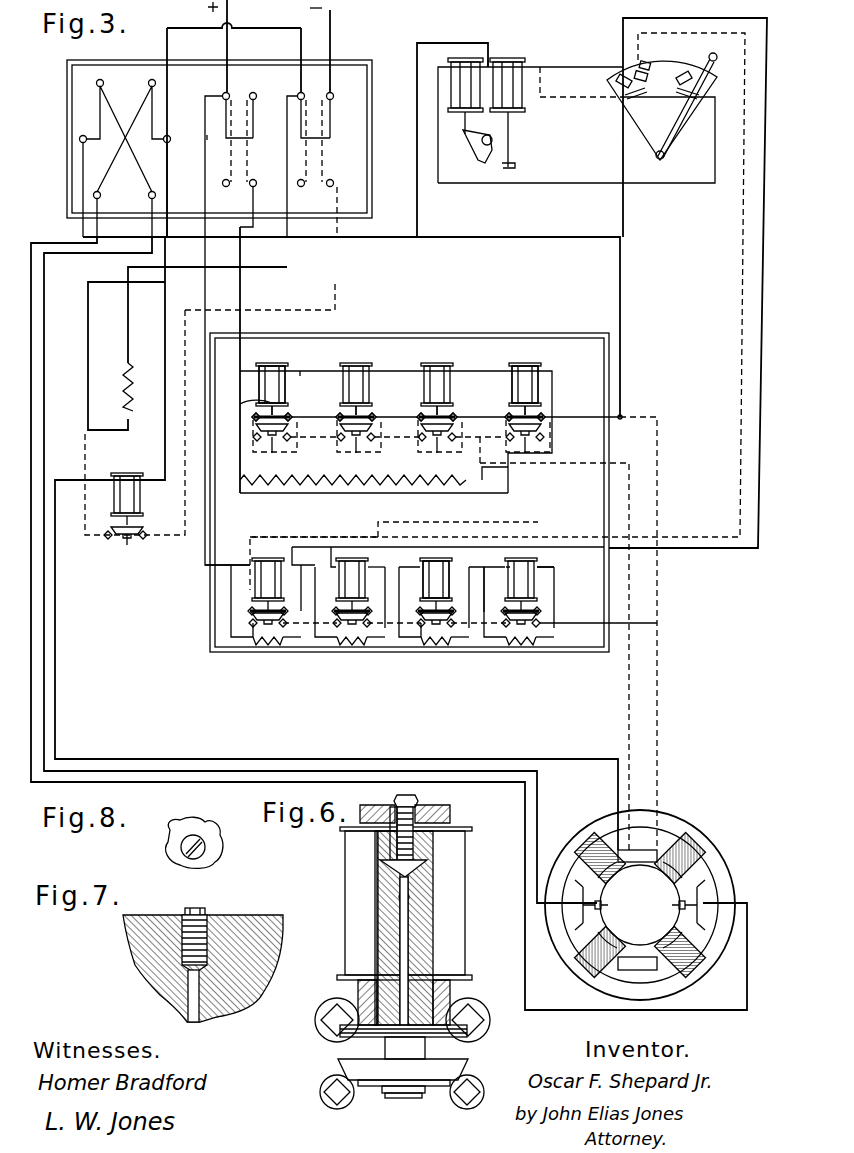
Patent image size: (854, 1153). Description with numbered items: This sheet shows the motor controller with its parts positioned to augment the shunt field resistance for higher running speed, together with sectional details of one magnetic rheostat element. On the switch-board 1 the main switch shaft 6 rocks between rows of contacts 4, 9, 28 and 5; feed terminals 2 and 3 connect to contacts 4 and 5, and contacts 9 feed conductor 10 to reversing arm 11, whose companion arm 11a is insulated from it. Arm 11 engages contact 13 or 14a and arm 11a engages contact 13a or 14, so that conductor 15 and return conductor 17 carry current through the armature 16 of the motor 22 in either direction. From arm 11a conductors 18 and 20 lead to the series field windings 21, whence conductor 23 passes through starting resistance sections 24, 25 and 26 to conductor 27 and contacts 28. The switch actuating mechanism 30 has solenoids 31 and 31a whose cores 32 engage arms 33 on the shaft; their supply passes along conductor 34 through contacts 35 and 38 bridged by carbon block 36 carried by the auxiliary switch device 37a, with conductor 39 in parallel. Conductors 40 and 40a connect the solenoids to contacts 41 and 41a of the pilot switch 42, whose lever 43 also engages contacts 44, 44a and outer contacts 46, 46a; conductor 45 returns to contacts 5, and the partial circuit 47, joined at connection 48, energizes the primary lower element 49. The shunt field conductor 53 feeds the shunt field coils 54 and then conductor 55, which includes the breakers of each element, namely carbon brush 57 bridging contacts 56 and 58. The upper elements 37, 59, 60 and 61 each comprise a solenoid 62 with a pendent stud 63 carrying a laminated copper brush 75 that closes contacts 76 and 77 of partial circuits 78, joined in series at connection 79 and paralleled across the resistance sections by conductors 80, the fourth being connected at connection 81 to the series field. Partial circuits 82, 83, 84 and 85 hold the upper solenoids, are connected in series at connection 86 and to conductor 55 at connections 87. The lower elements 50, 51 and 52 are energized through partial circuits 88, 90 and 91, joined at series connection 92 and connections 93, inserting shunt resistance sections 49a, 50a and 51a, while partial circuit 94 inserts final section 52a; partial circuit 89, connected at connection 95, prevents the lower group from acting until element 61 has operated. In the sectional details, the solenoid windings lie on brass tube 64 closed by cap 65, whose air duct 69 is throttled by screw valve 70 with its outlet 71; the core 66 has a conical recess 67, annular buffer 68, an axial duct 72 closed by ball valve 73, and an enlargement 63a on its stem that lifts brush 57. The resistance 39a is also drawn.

In FIG. 3, the switch-board 1 is at (67, 101).
In FIG. 3, the feed terminal 2 is at (331, 38).
In FIG. 3, the feed terminal 3 is at (228, 12).
In FIG. 3, the main switch contacts 4 is at (333, 94).
In FIG. 3, the main switch contacts 5 is at (223, 93).
In FIG. 3, the main switch shaft 6 is at (493, 140).
In FIG. 3, the contacts 9 is at (298, 94).
In FIG. 3, the conductor 10 is at (266, 32).
In FIG. 3, the reversing switch arm 11 is at (159, 124).
In FIG. 3, the reversing switch arm 11a is at (99, 118).
In FIG. 3, the reversing contact 13 is at (148, 83).
In FIG. 3, the reversing contact 13a is at (101, 79).
In FIG. 3, the reversing contact 14 is at (101, 195).
In FIG. 3, the reversing contact 14a is at (149, 197).
In FIG. 3, the conductor 15 is at (146, 107).
In FIG. 3, the armature 16 is at (640, 905).
In FIG. 3, the return conductor 17 is at (150, 160).
In FIG. 3, the conductor 18 is at (83, 178).
In FIG. 3, the conductor 20 is at (658, 703).
In FIG. 3, the series field windings 21 is at (640, 915).
In FIG. 3, the motor 22 is at (705, 845).
In FIG. 3, the conductor 23 is at (580, 463).
In FIG. 3, the starting resistance section 24 is at (460, 494).
In FIG. 3, the starting resistance section 25 is at (360, 495).
In FIG. 3, the starting resistance section 26 is at (240, 486).
In FIG. 3, the conductor 27 is at (241, 302).
In FIG. 3, the main switch contacts 28 is at (254, 92).
In FIG. 3, the switch actuating mechanism 30 is at (505, 62).
In FIG. 3, the solenoid 31 is at (465, 85).
In FIG. 3, the solenoid 31a is at (516, 80).
In FIG. 3, the solenoid core 32 is at (506, 119).
In FIG. 3, the arms 33 is at (476, 145).
In FIG. 3, the conductor 34 is at (477, 39).
In FIG. 3, the contact 35 is at (106, 538).
In FIG. 3, the carbon block 36 is at (127, 540).
In FIG. 3, the magnetic rheostat element 37 is at (272, 353).
In FIG. 3, the auxiliary switch device 37a is at (125, 472).
In FIG. 3, the contact 38 is at (144, 539).
In FIG. 3, the conductor 39 is at (288, 263).
In FIG. 3, the resistance 39a is at (126, 380).
In FIG. 3, the conductor 40 is at (617, 184).
In FIG. 3, the conductor 40a is at (562, 97).
In FIG. 3, the pilot switch contact 41 is at (712, 110).
In FIG. 3, the pilot switch contact 41a is at (628, 95).
In FIG. 3, the pilot switch 42 is at (662, 110).
In FIG. 3, the switch lever 43 is at (679, 150).
In FIG. 3, the contact 44 is at (654, 75).
In FIG. 3, the contact 44a is at (648, 68).
In FIG. 3, the conductor 45 is at (207, 136).
In FIG. 3, the contact 46 is at (717, 59).
In FIG. 3, the contact 46a is at (616, 80).
In FIG. 3, the partial circuit 47 is at (310, 547).
In FIG. 3, the connection 48 is at (245, 568).
In FIG. 3, the magnetic rheostat element 49 is at (272, 554).
In FIG. 3, the shunt field resistance section 49a is at (272, 646).
In FIG. 3, the magnetic rheostat element 50 is at (351, 557).
In FIG. 3, the shunt field resistance section 50a is at (355, 646).
In FIG. 3, the magnetic rheostat element 51 is at (436, 557).
In FIG. 3, the shunt field resistance section 51a is at (438, 646).
In FIG. 3, the magnetic rheostat element 52 is at (537, 570).
In FIG. 3, the shunt field resistance section 52a is at (538, 646).
In FIG. 3, the shunt field conductor 53 is at (163, 308).
In FIG. 3, the shunt field coils 54 is at (660, 872).
In FIG. 3, the conductor 55 is at (240, 545).
In FIG. 3, the contact point 56 is at (544, 437).
In FIG. 6, the contact point 56 is at (464, 1103).
In FIG. 3, the carbon contact brush 57 is at (256, 428).
In FIG. 6, the carbon contact brush 57 is at (403, 1072).
In FIG. 3, the contact point 58 is at (254, 438).
In FIG. 6, the contact point 58 is at (342, 1100).
In FIG. 3, the magnetic rheostat element 59 is at (356, 376).
In FIG. 3, the magnetic rheostat element 60 is at (437, 376).
In FIG. 3, the magnetic rheostat element 61 is at (526, 376).
In FIG. 3, the solenoid 62 is at (259, 385).
In FIG. 6, the solenoid 62 is at (345, 891).
In FIG. 3, the pendent stud 63 is at (274, 410).
In FIG. 6, the pendent stud 63 is at (425, 1050).
In FIG. 6, the enlargement 63a is at (408, 1099).
In FIG. 6, the brass tube 64 is at (377, 945).
In FIG. 8, the cap 65 is at (212, 828).
In FIG. 7, the cap 65 is at (265, 985).
In FIG. 6, the cap 65 is at (450, 848).
In FIG. 6, the core 66 is at (376, 900).
In FIG. 6, the conical recess 67 is at (427, 870).
In FIG. 6, the buffer 68 is at (390, 868).
In FIG. 7, the air duct 69 is at (190, 1004).
In FIG. 6, the air duct 69 is at (397, 850).
In FIG. 8, the screw valve 70 is at (206, 847).
In FIG. 7, the screw valve 70 is at (200, 910).
In FIG. 6, the screw valve 70 is at (394, 802).
In FIG. 8, the outlet 71 is at (182, 846).
In FIG. 7, the outlet 71 is at (186, 910).
In FIG. 6, the axial duct 72 is at (408, 940).
In FIG. 6, the ball valve 73 is at (410, 897).
In FIG. 3, the laminated copper brush 75 is at (360, 416).
In FIG. 6, the laminated copper brush 75 is at (352, 1037).
In FIG. 3, the contact point 76 is at (293, 416).
In FIG. 6, the contact point 76 is at (468, 1020).
In FIG. 3, the contact point 77 is at (252, 416).
In FIG. 6, the contact point 77 is at (337, 1020).
In FIG. 3, the partial circuit 78 is at (240, 404).
In FIG. 3, the series connection 79 is at (334, 430).
In FIG. 3, the conductor 80 is at (300, 470).
In FIG. 3, the connection 81 is at (622, 416).
In FIG. 3, the partial circuit 82 is at (300, 372).
In FIG. 3, the partial circuit 83 is at (307, 382).
In FIG. 3, the partial circuit 84 is at (400, 392).
In FIG. 3, the partial circuit 85 is at (514, 400).
In FIG. 3, the series connection 86 is at (385, 385).
In FIG. 3, the circuit connection 87 is at (355, 454).
In FIG. 3, the partial circuit 88 is at (331, 558).
In FIG. 3, the partial circuit 89 is at (540, 522).
In FIG. 3, the partial circuit 90 is at (402, 620).
In FIG. 3, the partial circuit 91 is at (518, 610).
In FIG. 3, the series connection 92 is at (336, 627).
In FIG. 3, the connection 93 is at (252, 627).
In FIG. 3, the partial circuit 94 is at (566, 630).
In FIG. 3, the connection 95 is at (392, 566).